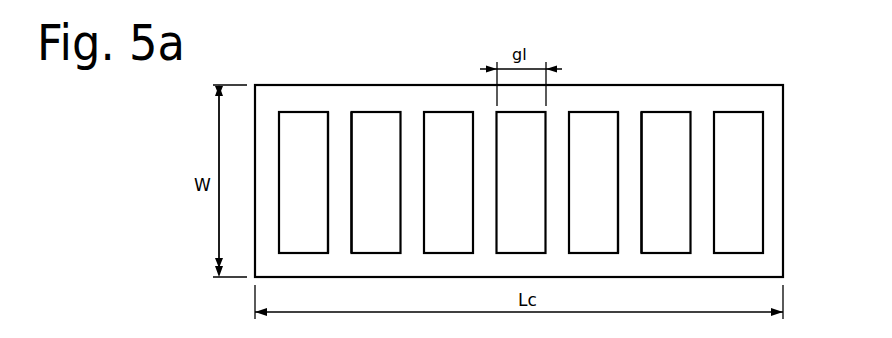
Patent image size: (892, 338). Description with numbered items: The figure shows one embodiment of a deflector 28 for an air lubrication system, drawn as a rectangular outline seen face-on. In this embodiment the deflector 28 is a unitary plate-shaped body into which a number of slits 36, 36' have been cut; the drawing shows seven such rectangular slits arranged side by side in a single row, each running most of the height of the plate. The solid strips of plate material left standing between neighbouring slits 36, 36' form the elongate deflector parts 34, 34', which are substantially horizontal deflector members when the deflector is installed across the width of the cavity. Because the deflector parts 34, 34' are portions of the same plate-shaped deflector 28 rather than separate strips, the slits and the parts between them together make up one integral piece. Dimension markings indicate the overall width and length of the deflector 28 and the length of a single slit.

The deflector 28 is at (715, 73).
The deflector member 34 is at (316, 142).
The deflector member 34' is at (627, 145).
The slit 36 is at (448, 142).
The slit 36' is at (732, 182).